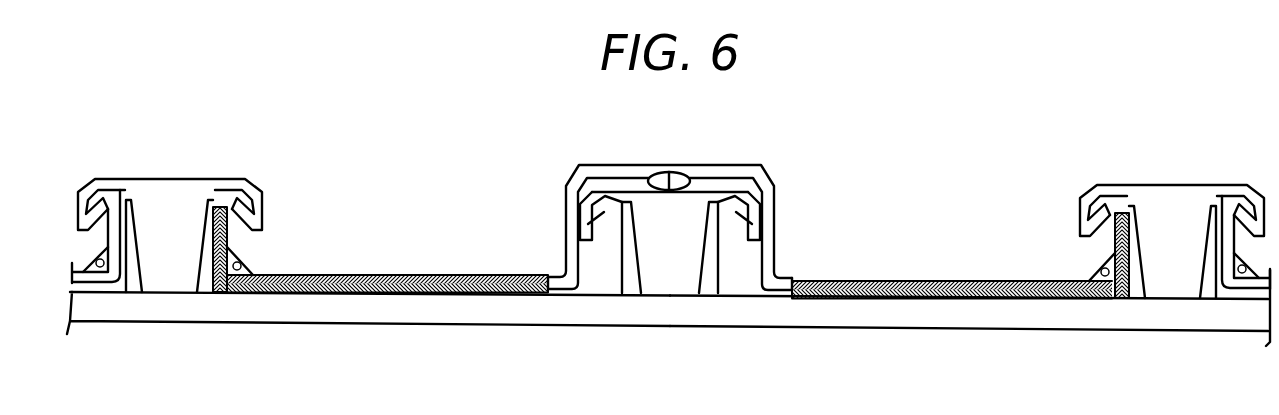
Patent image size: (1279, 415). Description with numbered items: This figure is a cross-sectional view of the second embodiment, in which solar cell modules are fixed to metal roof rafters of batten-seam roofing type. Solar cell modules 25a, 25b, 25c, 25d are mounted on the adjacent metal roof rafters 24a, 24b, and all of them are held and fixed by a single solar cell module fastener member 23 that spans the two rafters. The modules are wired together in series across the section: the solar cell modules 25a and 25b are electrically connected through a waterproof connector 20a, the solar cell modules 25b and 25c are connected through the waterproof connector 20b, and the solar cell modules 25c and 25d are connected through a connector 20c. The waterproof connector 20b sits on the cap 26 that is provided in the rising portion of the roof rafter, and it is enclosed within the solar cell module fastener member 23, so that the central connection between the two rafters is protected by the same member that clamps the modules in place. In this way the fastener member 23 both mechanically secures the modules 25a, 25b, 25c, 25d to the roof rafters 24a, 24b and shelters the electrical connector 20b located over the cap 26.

The waterproof connector 20a is at (1110, 298).
The waterproof connector 20b is at (688, 167).
The connector 20c is at (243, 264).
The solar cell module fastener member 23 is at (777, 238).
The metal roof rafter 24a is at (932, 298).
The metal roof rafter 24b is at (469, 293).
The solar cell module 25a is at (968, 282).
The solar cell module 25b is at (848, 298).
The solar cell module 25c is at (410, 276).
The solar cell module 25d is at (325, 293).
The cap 26 is at (630, 192).